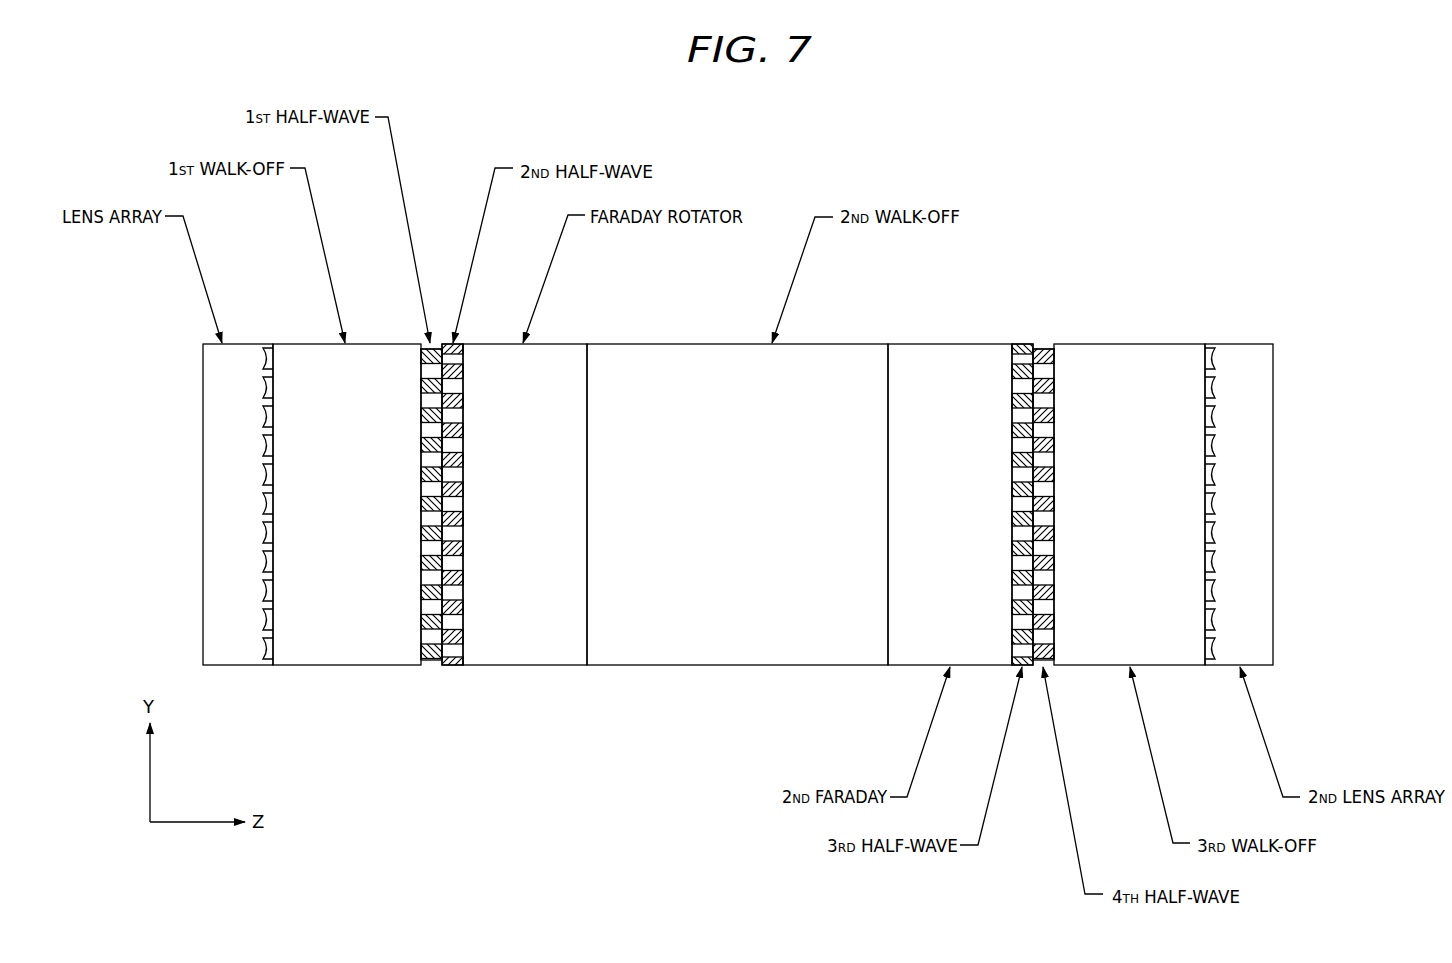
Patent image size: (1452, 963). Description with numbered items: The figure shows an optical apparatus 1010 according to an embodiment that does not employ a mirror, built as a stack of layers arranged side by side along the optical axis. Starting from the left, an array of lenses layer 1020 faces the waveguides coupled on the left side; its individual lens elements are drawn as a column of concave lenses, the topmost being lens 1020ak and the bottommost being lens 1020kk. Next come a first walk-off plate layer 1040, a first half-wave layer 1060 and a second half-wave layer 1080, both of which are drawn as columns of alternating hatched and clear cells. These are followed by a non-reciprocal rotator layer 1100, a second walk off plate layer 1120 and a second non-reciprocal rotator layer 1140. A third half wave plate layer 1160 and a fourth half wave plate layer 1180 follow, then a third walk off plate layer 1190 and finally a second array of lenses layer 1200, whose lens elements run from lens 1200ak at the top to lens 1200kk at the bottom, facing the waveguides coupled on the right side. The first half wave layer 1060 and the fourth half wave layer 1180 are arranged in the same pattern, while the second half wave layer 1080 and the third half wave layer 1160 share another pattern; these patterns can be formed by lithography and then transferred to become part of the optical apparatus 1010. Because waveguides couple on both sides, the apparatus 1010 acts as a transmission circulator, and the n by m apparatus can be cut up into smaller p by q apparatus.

The optical apparatus 1010 is at (1160, 178).
The array of lenses layer 1020 is at (250, 344).
The lens of the array of lenses layer 1020ak is at (262, 357).
The lens of the array of lenses layer 1020kk is at (262, 648).
The first walk-off plate layer 1040 is at (347, 666).
The first half-wave layer 1060 is at (432, 666).
The second half-wave layer 1080 is at (452, 666).
The non-reciprocal rotator layer 1100 is at (513, 666).
The second walk off plate layer 1120 is at (680, 344).
The second non-reciprocal rotator layer 1140 is at (940, 344).
The third half wave plate layer 1160 is at (1022, 344).
The fourth half wave plate layer 1180 is at (1045, 349).
The third walk off plate layer 1190 is at (1092, 666).
The second array of lenses layer 1200 is at (1240, 344).
The lens of the second array of lenses layer 1200ak is at (1215, 359).
The lens of the second array of lenses layer 1200kk is at (1215, 652).